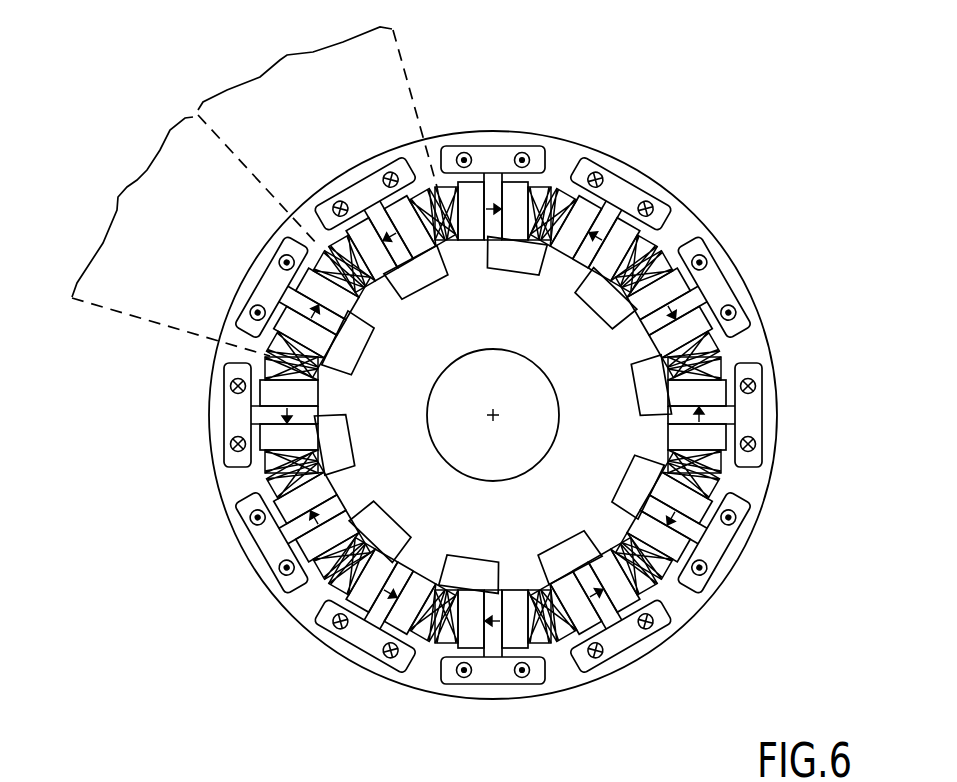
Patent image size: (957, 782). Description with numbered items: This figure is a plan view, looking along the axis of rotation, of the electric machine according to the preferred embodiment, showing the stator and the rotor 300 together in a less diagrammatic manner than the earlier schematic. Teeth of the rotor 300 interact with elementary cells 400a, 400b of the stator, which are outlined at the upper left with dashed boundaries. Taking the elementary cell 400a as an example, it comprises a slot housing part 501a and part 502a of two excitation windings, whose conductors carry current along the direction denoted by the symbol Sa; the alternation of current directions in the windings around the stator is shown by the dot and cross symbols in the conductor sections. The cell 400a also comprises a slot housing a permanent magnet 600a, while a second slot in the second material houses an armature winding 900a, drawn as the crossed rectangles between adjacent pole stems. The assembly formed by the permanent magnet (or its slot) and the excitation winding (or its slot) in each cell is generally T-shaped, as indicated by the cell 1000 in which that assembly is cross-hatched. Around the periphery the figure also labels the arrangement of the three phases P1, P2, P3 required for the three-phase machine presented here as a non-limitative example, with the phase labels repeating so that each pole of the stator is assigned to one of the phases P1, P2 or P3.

The cell 1000 is at (507, 157).
The rotor 300 is at (517, 329).
The permanent magnet 600a is at (333, 319).
The armature winding 900a is at (358, 287).
The current direction symbol Sa is at (290, 225).
The part of excitation winding 502a is at (247, 282).
The part of excitation winding 501a is at (243, 323).
The elementary cell 400a is at (184, 235).
The elementary cell 400b is at (317, 102).
The first phase P1 is at (492, 469).
The second phase P2 is at (496, 413).
The third phase P3 is at (546, 418).